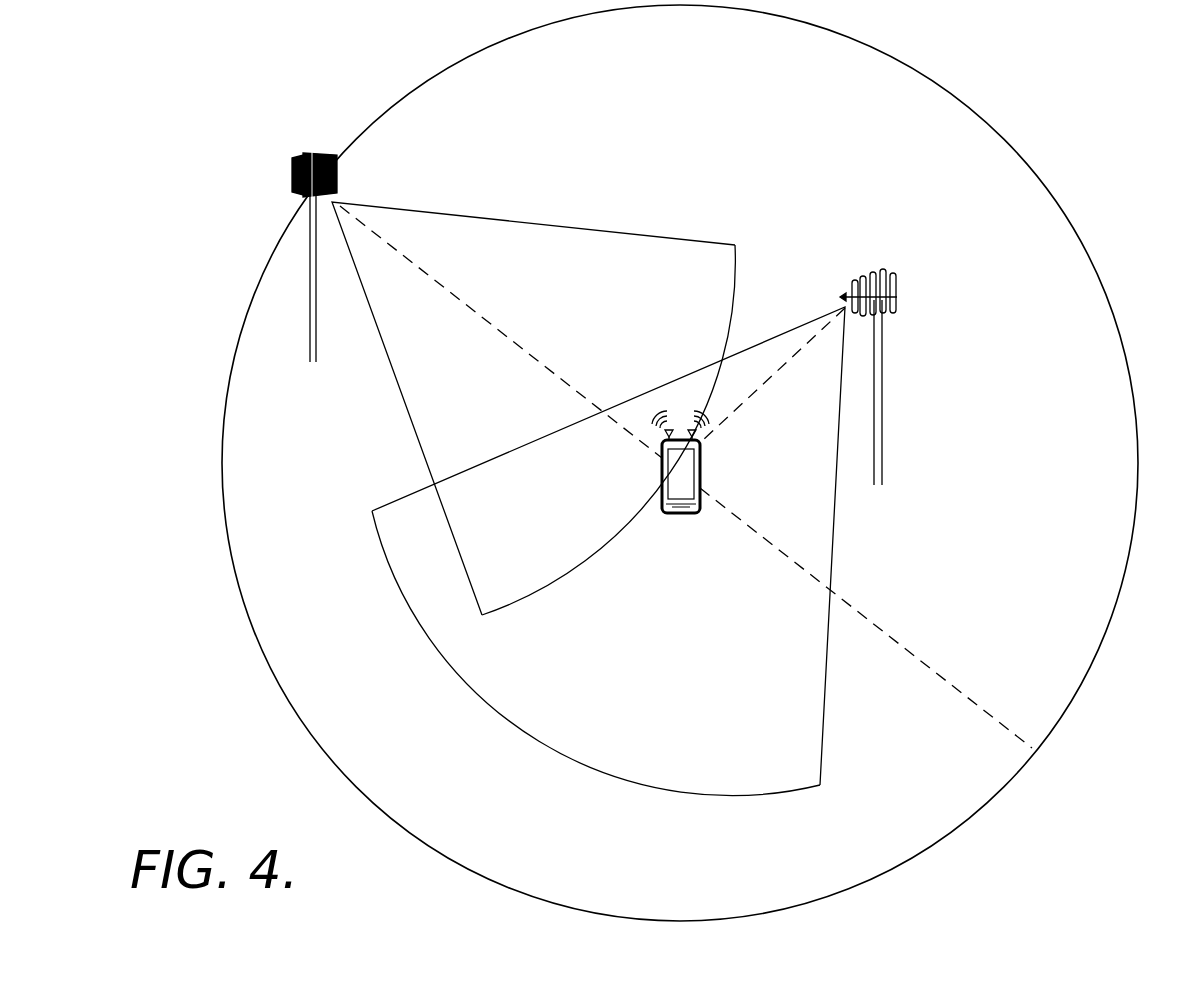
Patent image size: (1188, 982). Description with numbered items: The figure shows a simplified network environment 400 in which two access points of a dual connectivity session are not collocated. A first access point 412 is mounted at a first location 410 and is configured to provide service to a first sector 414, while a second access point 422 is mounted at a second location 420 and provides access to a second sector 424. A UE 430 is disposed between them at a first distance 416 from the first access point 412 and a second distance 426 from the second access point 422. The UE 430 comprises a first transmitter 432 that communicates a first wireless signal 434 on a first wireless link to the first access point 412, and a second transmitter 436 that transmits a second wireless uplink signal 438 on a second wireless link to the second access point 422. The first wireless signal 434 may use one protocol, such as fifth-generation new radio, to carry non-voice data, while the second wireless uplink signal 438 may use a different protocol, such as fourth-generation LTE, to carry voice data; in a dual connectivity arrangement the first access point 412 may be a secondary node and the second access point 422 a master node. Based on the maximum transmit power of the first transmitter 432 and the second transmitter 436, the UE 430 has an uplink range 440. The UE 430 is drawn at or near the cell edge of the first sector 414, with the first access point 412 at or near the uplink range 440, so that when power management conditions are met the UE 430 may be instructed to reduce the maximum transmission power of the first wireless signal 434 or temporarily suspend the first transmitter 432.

The network environment 400 is at (1132, 93).
The first location 410 is at (309, 281).
The first access point 412 is at (318, 152).
The first sector 414 is at (552, 224).
The first distance 416 is at (498, 331).
The second location 420 is at (883, 407).
The second access point 422 is at (883, 272).
The second sector 424 is at (773, 337).
The second distance 426 is at (773, 380).
The UE 430 is at (683, 514).
The first transmitter 432 is at (661, 438).
The first wireless signal 434 is at (655, 413).
The second transmitter 436 is at (699, 438).
The second wireless uplink signal 438 is at (708, 418).
The uplink range 440 is at (884, 636).